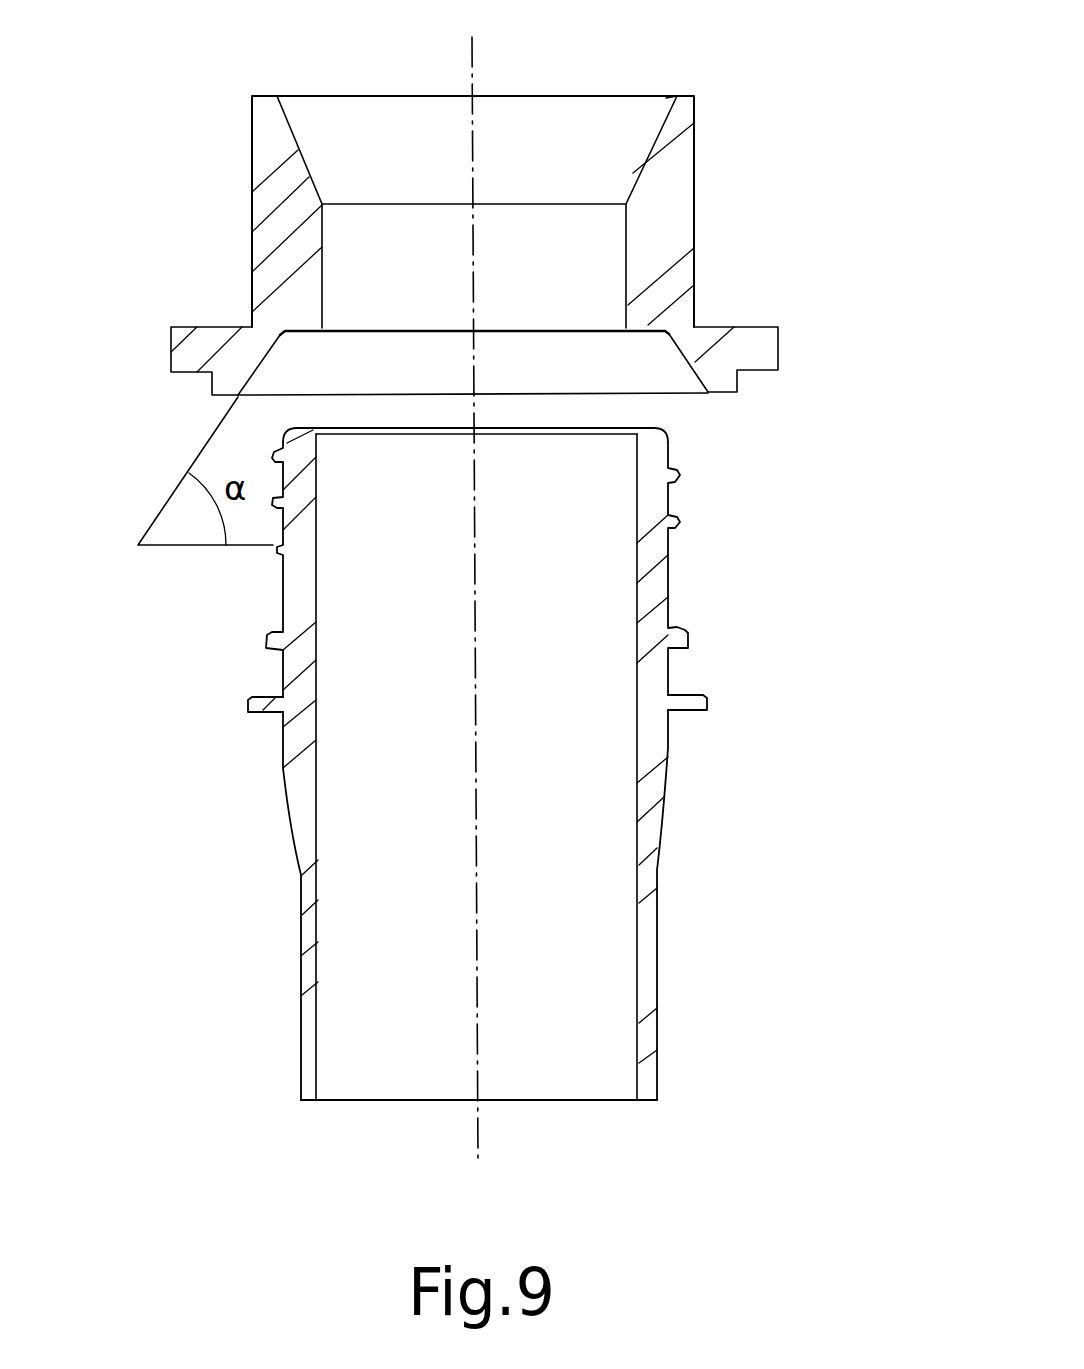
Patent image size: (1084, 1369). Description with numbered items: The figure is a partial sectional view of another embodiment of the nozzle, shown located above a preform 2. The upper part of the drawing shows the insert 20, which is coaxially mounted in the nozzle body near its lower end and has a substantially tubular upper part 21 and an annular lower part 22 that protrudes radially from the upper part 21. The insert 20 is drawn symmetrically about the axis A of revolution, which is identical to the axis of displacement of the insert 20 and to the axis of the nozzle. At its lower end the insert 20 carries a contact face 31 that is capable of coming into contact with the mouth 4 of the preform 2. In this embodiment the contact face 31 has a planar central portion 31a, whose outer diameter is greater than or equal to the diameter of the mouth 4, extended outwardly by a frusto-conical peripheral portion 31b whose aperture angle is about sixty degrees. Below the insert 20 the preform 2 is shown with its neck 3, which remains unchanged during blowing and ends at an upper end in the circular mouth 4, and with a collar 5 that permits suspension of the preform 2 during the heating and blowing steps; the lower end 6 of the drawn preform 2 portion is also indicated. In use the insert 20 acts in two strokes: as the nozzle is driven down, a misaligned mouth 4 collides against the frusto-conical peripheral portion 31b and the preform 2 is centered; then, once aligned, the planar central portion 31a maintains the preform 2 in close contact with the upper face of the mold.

The axis of revolution A is at (472, 38).
The preform 2 is at (528, 770).
The neck 3 is at (742, 424).
The mouth 4 is at (645, 426).
The collar 5 is at (692, 706).
The lower end of tubular body 6 is at (658, 1073).
The insert 20 is at (508, 207).
The upper part 21 is at (683, 187).
The lower part 22 is at (753, 333).
The contact face 31 is at (473, 377).
The planar central portion 31a is at (310, 348).
The frusto-conical peripheral portion 31b is at (260, 369).